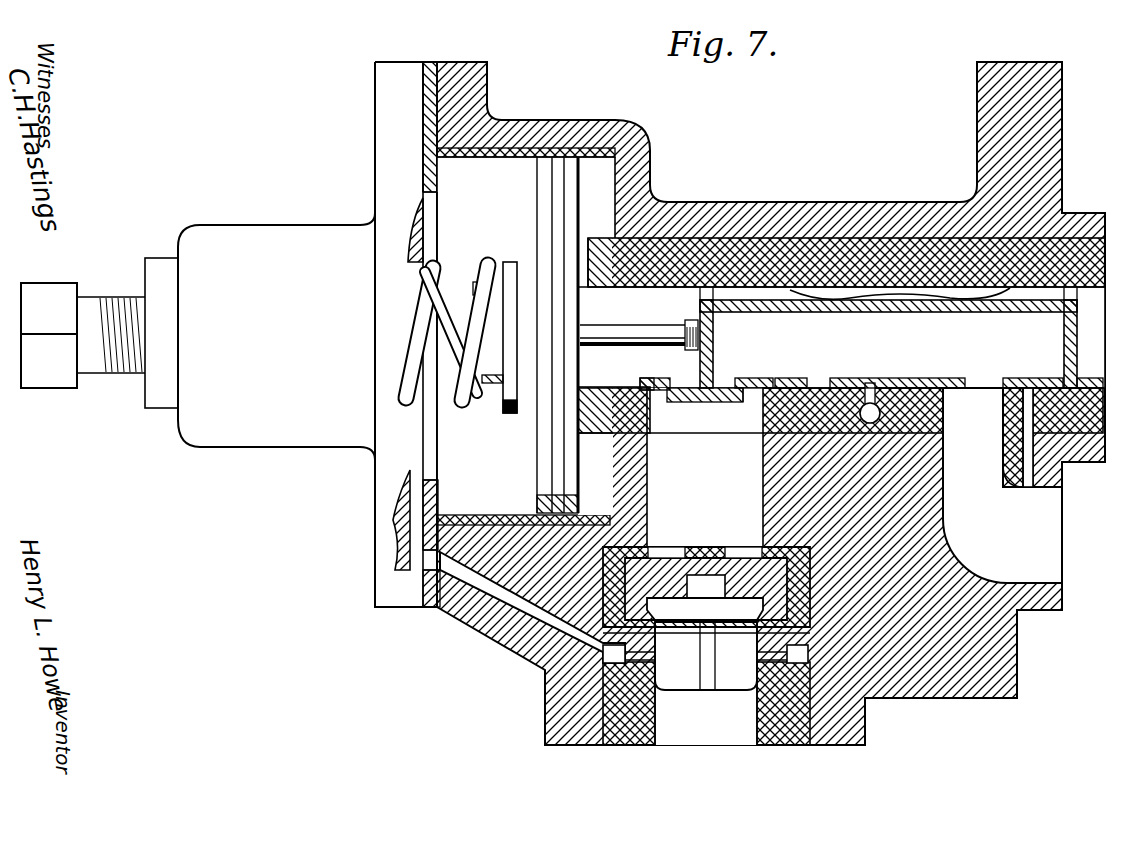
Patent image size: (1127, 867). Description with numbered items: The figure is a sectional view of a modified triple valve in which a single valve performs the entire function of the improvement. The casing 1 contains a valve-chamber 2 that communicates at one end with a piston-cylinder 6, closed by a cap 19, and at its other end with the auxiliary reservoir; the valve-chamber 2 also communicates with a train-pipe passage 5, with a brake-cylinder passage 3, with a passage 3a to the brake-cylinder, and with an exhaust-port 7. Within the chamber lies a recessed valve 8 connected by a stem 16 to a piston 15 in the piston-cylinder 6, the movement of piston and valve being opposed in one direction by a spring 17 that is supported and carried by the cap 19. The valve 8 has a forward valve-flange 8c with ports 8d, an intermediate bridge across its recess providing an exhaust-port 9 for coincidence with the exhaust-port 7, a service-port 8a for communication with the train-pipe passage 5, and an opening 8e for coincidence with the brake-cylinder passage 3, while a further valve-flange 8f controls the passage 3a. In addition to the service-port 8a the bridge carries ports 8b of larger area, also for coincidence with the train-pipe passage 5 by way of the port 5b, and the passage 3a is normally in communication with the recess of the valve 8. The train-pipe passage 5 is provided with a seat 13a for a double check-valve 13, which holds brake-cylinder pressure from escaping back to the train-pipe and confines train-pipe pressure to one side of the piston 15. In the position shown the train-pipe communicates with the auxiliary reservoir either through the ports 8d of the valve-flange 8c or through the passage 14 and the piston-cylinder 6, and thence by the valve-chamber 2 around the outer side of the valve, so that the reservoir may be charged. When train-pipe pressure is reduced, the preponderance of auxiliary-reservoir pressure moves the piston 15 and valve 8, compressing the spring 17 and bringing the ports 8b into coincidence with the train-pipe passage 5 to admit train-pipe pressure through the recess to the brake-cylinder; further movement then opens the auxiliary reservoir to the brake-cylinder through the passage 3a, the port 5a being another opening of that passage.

The casing 1 is at (880, 206).
The valve-chamber 2 is at (841, 313).
The brake-cylinder passage 3 is at (1023, 485).
The passage to the brake-cylinder 3a is at (1028, 395).
The train-pipe passage 5 is at (670, 467).
The port 5a is at (698, 406).
The port 5b is at (747, 405).
The piston-cylinder 6 is at (519, 377).
The exhaust-port 7 is at (860, 415).
The recessed valve 8 is at (803, 313).
The service-port 8a is at (776, 380).
The ports 8b is at (738, 380).
The valve-flange 8c is at (661, 376).
The ports of the valve-flange 8d is at (650, 380).
The opening 8e is at (1023, 373).
The valve-flange 8f is at (1088, 383).
The exhaust-port 9 is at (870, 386).
The double check-valve 13 is at (706, 646).
The seat 13a is at (672, 633).
The passage 14 is at (540, 608).
The piston 15 is at (525, 335).
The stem 16 is at (594, 340).
The spring 17 is at (462, 408).
The cap 19 is at (380, 543).